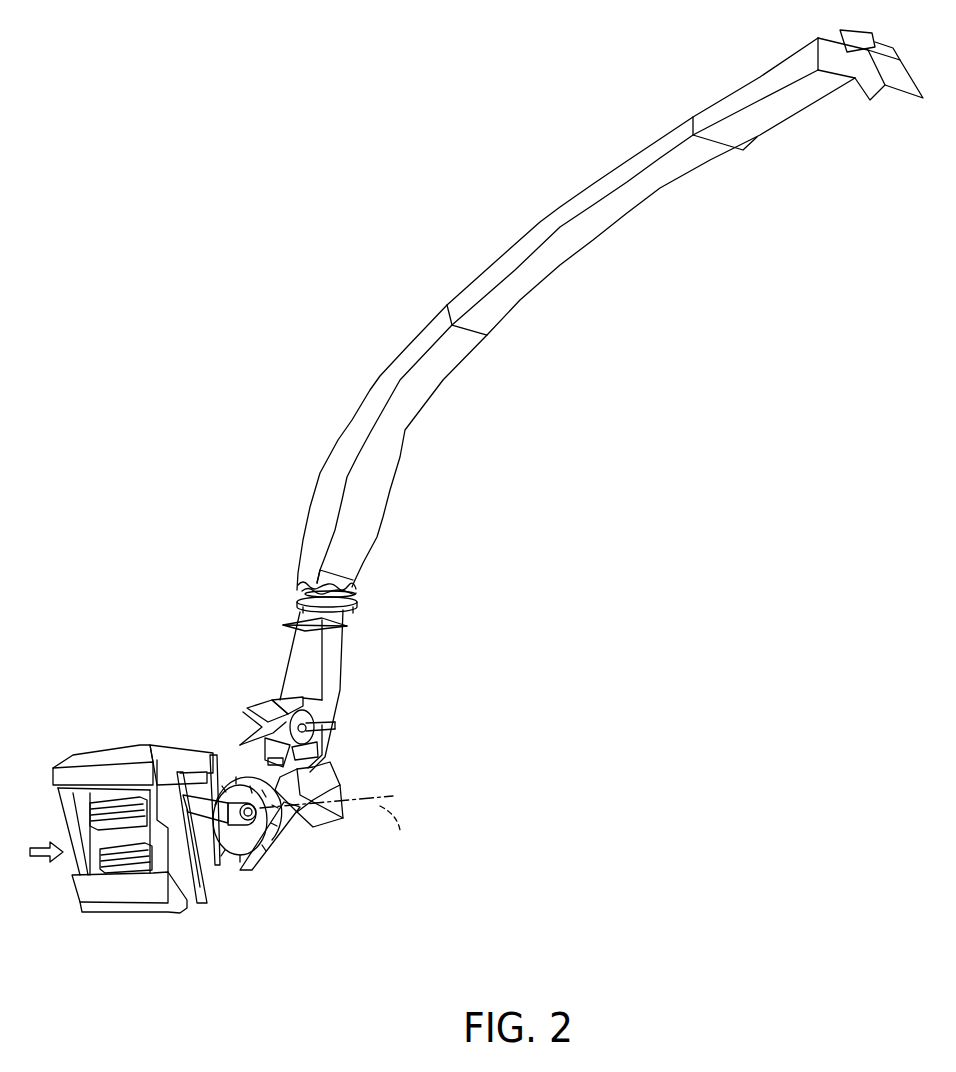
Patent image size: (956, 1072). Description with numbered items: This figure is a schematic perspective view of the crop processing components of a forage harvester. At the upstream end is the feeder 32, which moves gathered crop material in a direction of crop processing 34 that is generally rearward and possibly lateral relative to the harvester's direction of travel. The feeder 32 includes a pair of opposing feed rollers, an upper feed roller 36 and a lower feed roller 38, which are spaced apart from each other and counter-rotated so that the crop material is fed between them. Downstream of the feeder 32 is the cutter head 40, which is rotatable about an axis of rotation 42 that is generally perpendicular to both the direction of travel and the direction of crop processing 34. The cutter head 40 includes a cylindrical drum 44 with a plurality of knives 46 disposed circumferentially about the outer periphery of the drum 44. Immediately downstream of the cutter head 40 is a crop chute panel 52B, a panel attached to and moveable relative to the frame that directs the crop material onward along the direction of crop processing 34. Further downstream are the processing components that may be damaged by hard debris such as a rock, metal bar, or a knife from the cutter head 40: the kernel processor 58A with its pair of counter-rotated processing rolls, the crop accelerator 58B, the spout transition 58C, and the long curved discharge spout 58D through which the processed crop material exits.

The feeder 32 is at (113, 750).
The direction of crop processing 34 is at (37, 857).
The upper feed roller 36 is at (110, 812).
The lower feed roller 38 is at (122, 855).
The cutter head 40 is at (229, 766).
The axis of rotation 42 is at (340, 828).
The drum 44 is at (252, 810).
The knives 46 is at (237, 856).
The crop chute panel 52B is at (285, 835).
The kernel processor 58A is at (333, 776).
The crop accelerator 58B is at (262, 712).
The spout transition 58C is at (337, 643).
The discharge spout 58D is at (397, 420).